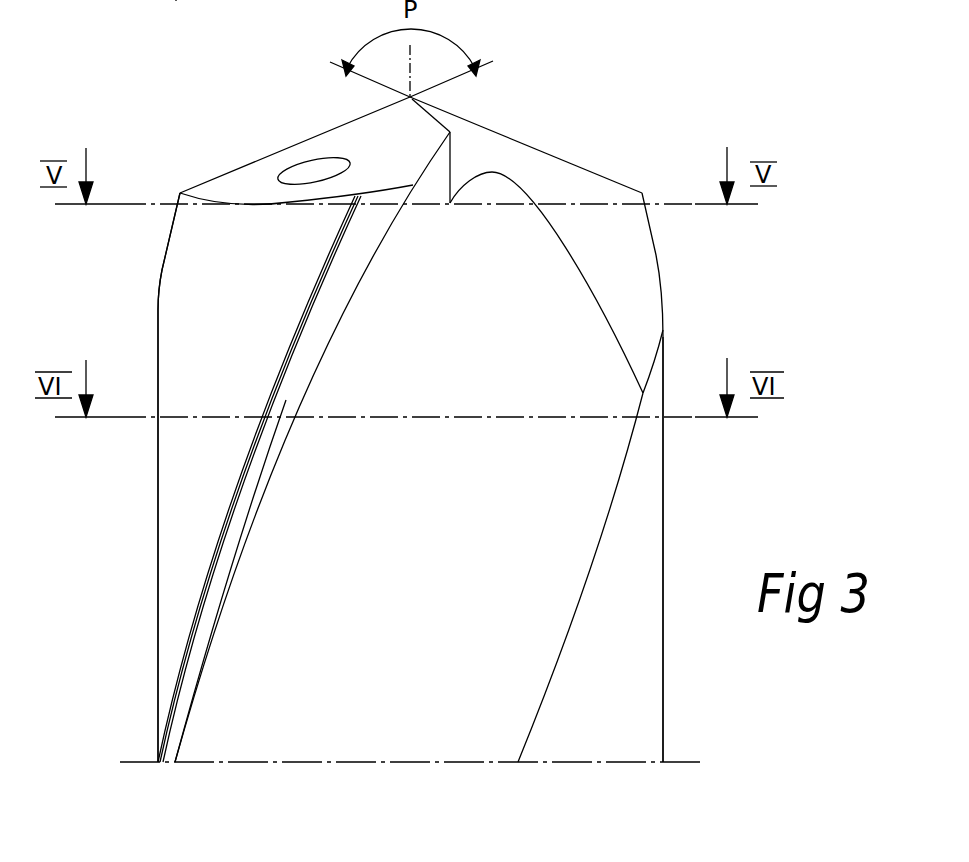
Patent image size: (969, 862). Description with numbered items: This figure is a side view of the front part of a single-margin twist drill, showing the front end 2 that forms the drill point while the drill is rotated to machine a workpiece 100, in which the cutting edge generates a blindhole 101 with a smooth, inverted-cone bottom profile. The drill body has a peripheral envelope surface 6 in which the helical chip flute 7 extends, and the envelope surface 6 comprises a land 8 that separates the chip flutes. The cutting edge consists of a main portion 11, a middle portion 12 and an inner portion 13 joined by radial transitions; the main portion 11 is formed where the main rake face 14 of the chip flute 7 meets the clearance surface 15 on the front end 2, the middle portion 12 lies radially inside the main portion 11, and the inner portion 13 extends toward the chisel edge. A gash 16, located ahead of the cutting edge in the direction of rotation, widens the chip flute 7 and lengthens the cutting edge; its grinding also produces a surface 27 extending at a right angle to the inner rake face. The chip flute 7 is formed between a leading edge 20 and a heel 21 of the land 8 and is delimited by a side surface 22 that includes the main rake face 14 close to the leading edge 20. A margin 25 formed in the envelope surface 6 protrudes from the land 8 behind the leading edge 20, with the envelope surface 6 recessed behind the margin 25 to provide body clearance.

The front end 2 is at (242, 159).
The peripheral envelope surface 6 is at (227, 331).
The helical chip flute 7 is at (272, 593).
The land 8 is at (210, 262).
The main portion 11 is at (423, 170).
The middle portion 12 is at (458, 122).
The inner portion 13 is at (433, 107).
The main rake face 14 is at (420, 282).
The clearance surface 15 is at (405, 158).
The gash 16 is at (572, 188).
The leading edge 20 is at (350, 308).
The heel 21 is at (613, 512).
The side surface 22 is at (531, 345).
The margin 25 is at (267, 442).
The surface 27 is at (633, 244).
The workpiece 100 is at (752, 0).
The blindhole 101 is at (200, 9).